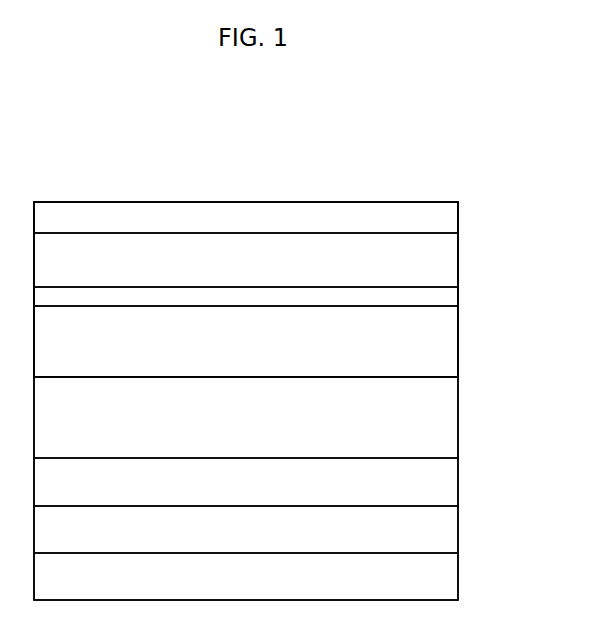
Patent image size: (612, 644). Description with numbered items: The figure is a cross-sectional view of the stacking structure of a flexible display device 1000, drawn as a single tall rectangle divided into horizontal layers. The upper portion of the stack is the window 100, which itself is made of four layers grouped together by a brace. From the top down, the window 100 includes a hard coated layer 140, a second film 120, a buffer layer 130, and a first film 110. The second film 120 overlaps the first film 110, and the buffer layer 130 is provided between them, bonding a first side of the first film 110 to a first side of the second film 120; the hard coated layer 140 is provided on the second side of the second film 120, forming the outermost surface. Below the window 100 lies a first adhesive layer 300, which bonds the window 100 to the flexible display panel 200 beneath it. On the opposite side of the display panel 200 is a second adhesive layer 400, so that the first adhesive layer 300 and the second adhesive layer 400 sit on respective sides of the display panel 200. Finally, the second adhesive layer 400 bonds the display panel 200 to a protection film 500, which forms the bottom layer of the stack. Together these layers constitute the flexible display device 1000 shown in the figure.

The flexible display device 1000 is at (272, 156).
The window 100 is at (522, 208).
The hard coated layer 140 is at (458, 215).
The second film 120 is at (458, 255).
The buffer layer 130 is at (458, 295).
The first film 110 is at (458, 337).
The first adhesive layer 300 is at (458, 415).
The flexible display panel 200 is at (458, 477).
The second adhesive layer 400 is at (458, 525).
The protection film 500 is at (458, 574).